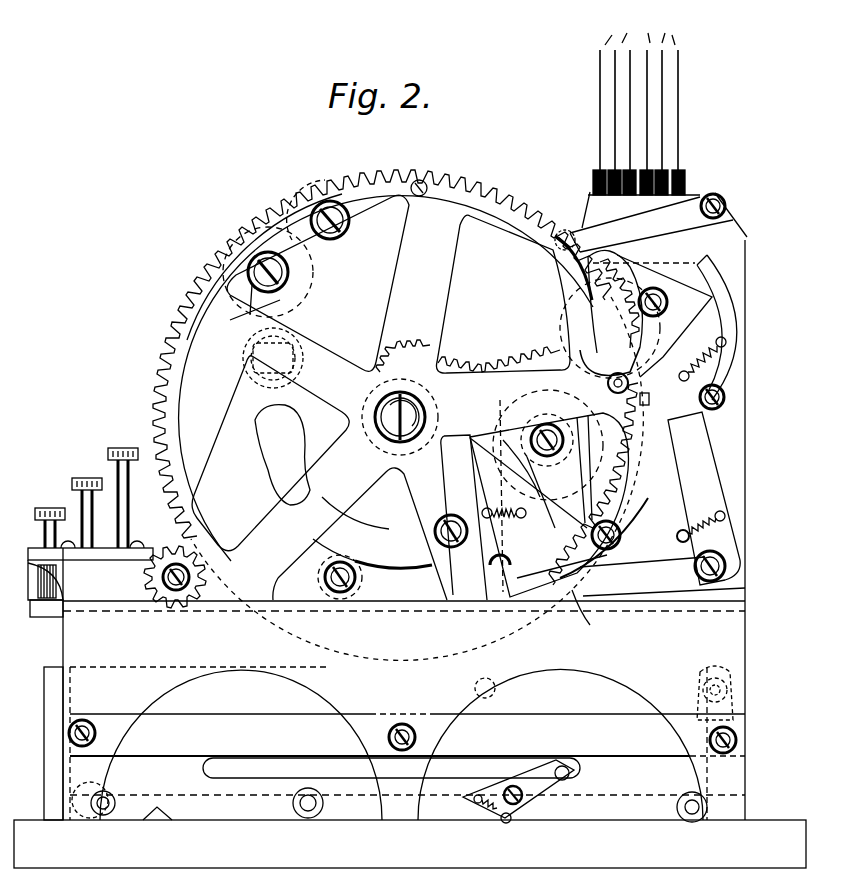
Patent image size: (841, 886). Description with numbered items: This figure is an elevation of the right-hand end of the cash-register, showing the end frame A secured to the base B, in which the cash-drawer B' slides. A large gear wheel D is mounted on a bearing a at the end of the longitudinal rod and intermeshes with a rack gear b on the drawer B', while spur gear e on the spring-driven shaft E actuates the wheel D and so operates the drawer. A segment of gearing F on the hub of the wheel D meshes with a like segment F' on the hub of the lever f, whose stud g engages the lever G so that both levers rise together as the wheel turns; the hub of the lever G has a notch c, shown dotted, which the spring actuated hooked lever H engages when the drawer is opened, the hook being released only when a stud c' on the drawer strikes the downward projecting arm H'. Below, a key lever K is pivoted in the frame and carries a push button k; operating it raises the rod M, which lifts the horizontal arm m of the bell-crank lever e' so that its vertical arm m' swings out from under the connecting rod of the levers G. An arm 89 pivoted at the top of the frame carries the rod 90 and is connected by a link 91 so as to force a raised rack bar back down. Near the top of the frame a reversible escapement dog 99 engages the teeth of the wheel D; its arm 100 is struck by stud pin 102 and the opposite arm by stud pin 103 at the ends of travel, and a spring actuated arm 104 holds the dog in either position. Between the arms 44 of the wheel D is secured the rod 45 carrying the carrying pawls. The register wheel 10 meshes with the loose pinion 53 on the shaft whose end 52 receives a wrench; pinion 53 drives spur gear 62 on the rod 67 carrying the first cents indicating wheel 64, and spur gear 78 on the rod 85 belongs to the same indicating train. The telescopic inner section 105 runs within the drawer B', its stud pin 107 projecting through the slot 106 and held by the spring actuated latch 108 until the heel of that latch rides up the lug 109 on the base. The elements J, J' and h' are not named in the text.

The geared register wheel 10 is at (610, 361).
The arms of the wheels D, D' 44 is at (461, 517).
The rod 45 is at (367, 563).
The end of shaft 52 is at (285, 372).
The loose pinion 53 is at (258, 366).
The spur gear 62 is at (258, 297).
The first cents register indicating wheel 64 is at (230, 226).
The rod 67 is at (290, 273).
The spur gear 78 is at (300, 183).
The rod 85 is at (350, 230).
The arm 89 is at (658, 222).
The rod 90 is at (562, 234).
The link 91 is at (610, 314).
The reversible escapement dog 99 is at (652, 316).
The arm of the dog 100 is at (590, 269).
The stud pin 102 is at (427, 190).
The stud pin 103 is at (618, 394).
The spring actuated arm 104 is at (742, 326).
The inner section of the drawer 105 is at (391, 768).
The slot 106 is at (268, 756).
The stud pin 107 is at (569, 773).
The spring actuated latch or lever 108 is at (540, 792).
The lug 109 is at (168, 812).
The end frame A is at (474, 389).
The base B is at (410, 554).
The cash-drawer B' is at (117, 743).
The gear wheel D is at (386, 397).
The bearing a is at (385, 425).
The shaft E is at (178, 592).
The spur gear e is at (182, 591).
The segment of gearing F is at (499, 352).
The segment of gearing F' is at (518, 340).
The spring actuated hooked lever H is at (549, 498).
The lever f is at (531, 462).
The stud g is at (511, 489).
The lever G is at (596, 538).
The terminal block J is at (633, 175).
The wires J' is at (639, 92).
The key lever K is at (47, 604).
The push button k is at (50, 507).
The post h' is at (31, 581).
The rod M is at (585, 616).
The horizontal arm m is at (662, 576).
The vertical arm m' is at (704, 498).
The bell-crank lever e' is at (712, 575).
The notch c is at (593, 479).
The stud c' is at (458, 689).
The downward projecting arm H' is at (515, 695).
The rack gear b is at (532, 668).